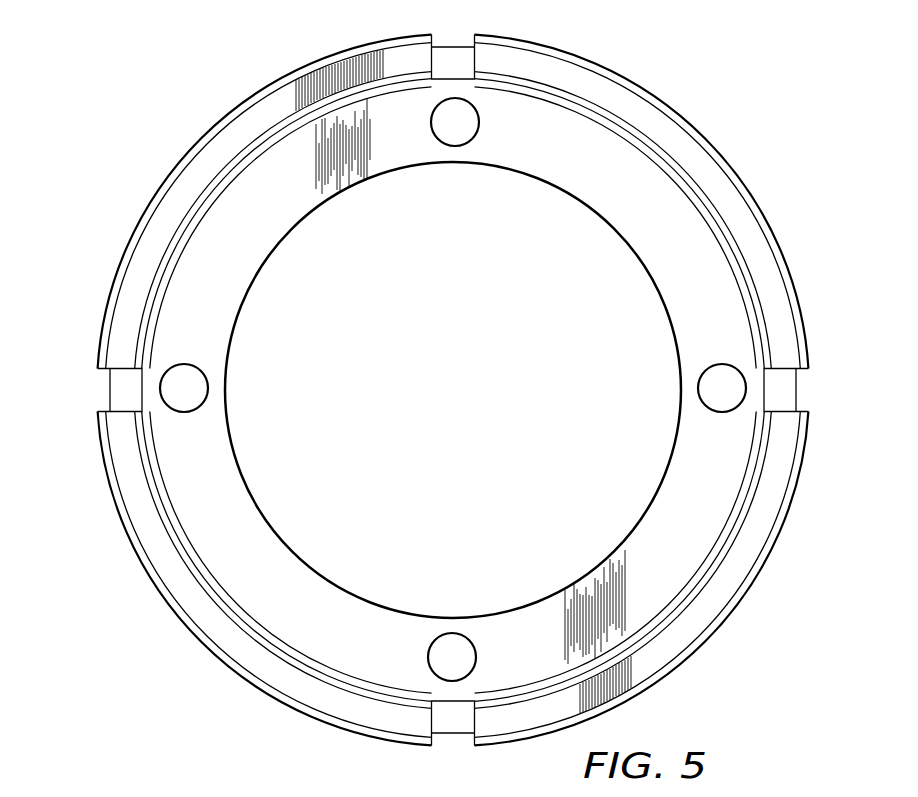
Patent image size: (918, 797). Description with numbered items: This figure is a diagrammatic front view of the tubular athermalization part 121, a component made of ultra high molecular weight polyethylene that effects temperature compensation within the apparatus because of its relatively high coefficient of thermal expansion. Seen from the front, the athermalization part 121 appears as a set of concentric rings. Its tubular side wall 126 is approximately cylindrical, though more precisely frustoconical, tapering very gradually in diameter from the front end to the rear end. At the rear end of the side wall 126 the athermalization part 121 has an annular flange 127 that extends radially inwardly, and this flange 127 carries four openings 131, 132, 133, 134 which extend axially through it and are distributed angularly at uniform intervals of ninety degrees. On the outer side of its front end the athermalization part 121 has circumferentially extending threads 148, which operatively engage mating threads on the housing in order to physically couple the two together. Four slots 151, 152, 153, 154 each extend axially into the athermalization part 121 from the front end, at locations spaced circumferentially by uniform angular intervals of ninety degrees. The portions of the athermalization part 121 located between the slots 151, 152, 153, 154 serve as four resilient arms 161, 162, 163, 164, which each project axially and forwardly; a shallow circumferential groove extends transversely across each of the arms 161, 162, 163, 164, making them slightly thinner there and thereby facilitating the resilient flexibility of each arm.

The athermalization part 121 is at (682, 118).
The tubular side wall 126 is at (740, 205).
The annular flange 127 is at (603, 195).
The opening 131 is at (472, 131).
The opening 132 is at (715, 373).
The opening 133 is at (471, 667).
The opening 134 is at (183, 373).
The threads 148 is at (795, 272).
The slot 151 is at (470, 58).
The slot 152 is at (787, 372).
The slot 153 is at (432, 717).
The slot 154 is at (115, 368).
The resilient arm 161 is at (603, 86).
The resilient arm 162 is at (695, 633).
The resilient arm 163 is at (217, 630).
The resilient arm 164 is at (217, 147).